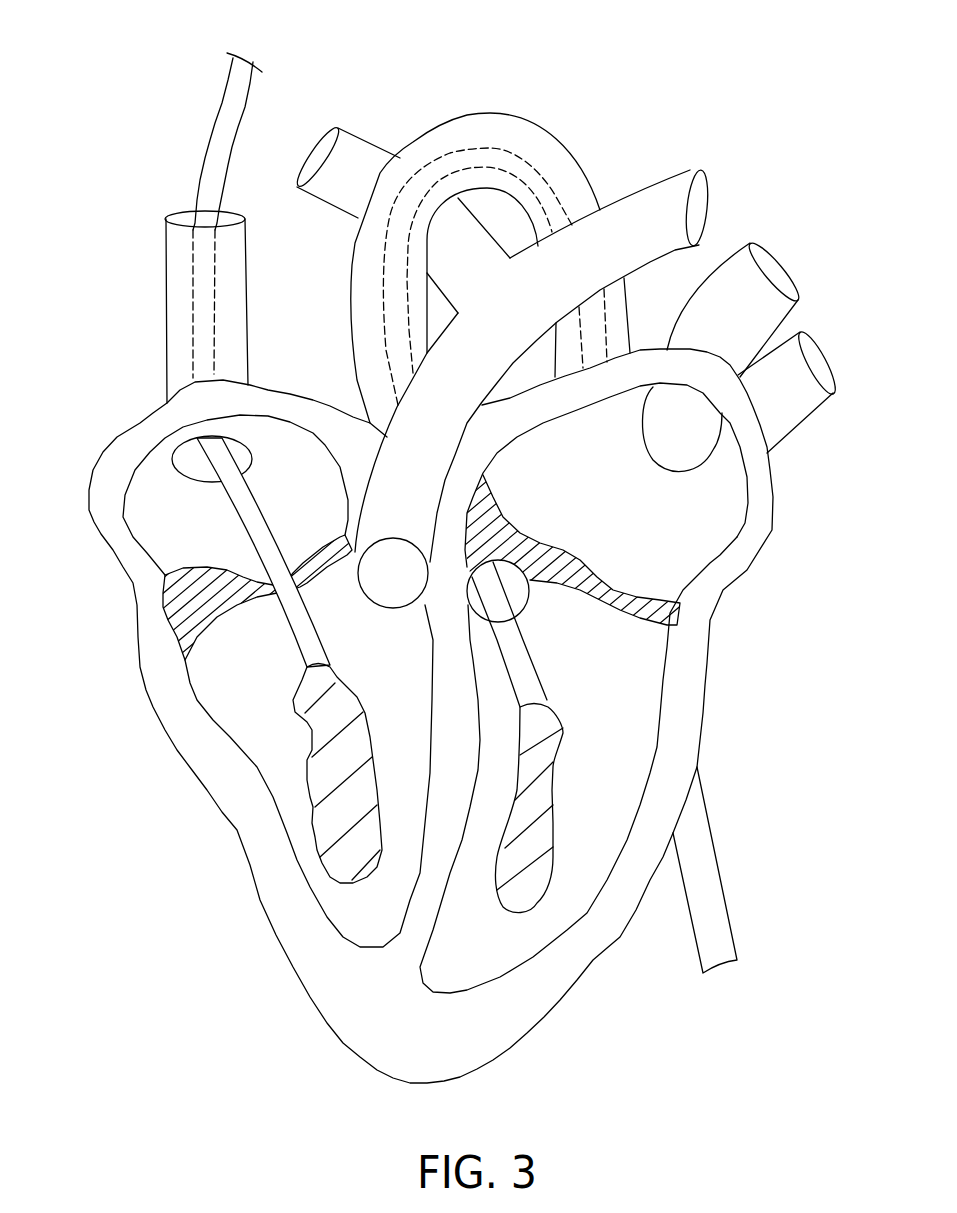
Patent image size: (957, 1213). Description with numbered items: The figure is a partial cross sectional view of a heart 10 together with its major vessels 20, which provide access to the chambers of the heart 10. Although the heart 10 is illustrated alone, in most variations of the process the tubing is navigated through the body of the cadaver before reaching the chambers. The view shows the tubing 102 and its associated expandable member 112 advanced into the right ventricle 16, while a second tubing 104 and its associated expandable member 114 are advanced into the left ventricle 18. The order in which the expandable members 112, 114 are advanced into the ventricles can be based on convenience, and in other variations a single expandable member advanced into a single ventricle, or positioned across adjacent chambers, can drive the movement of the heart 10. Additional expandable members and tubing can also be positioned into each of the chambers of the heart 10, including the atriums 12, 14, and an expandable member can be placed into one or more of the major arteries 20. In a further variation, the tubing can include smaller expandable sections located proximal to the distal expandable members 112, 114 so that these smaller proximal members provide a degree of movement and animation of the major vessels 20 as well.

The heart 10 is at (370, 1037).
The atrium 12 is at (177, 520).
The atrium 14 is at (703, 528).
The right ventricle 16 is at (253, 737).
The left ventricle 18 is at (643, 667).
The major vessels 20 is at (180, 290).
The tubing 102 is at (213, 147).
The second tubing 104 is at (717, 900).
The expandable member 112 is at (330, 867).
The expandable member 114 is at (530, 893).